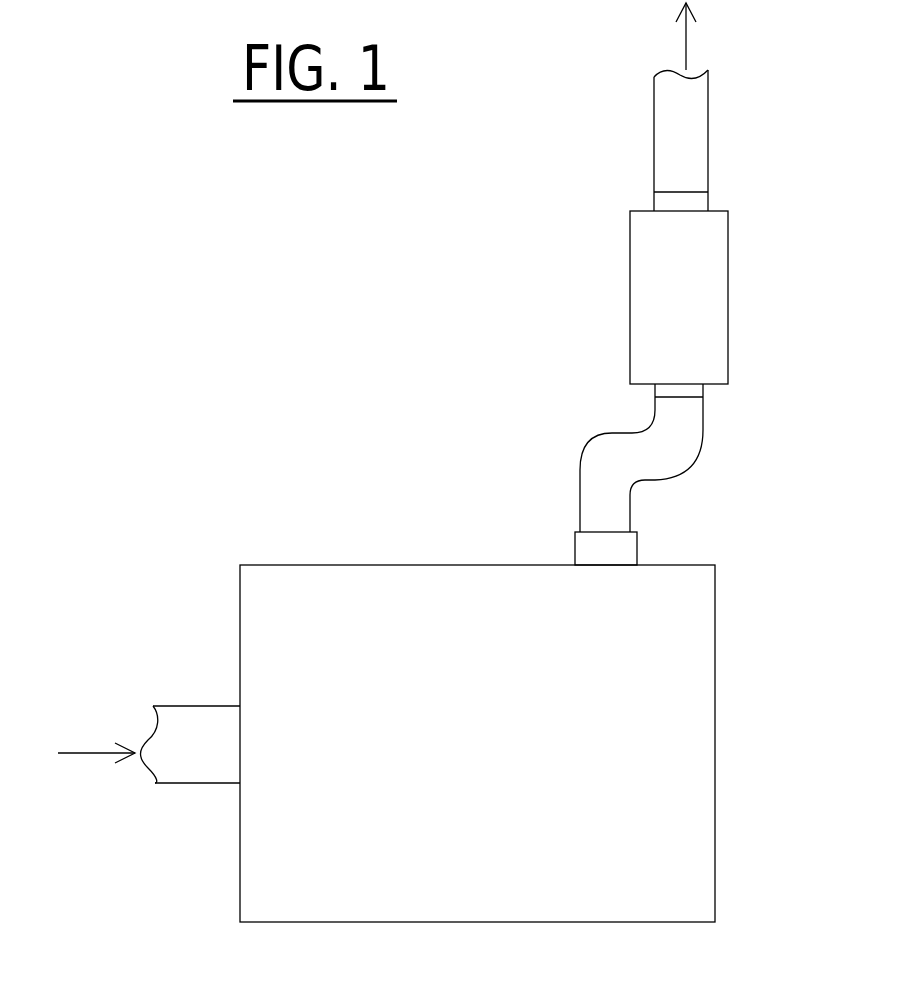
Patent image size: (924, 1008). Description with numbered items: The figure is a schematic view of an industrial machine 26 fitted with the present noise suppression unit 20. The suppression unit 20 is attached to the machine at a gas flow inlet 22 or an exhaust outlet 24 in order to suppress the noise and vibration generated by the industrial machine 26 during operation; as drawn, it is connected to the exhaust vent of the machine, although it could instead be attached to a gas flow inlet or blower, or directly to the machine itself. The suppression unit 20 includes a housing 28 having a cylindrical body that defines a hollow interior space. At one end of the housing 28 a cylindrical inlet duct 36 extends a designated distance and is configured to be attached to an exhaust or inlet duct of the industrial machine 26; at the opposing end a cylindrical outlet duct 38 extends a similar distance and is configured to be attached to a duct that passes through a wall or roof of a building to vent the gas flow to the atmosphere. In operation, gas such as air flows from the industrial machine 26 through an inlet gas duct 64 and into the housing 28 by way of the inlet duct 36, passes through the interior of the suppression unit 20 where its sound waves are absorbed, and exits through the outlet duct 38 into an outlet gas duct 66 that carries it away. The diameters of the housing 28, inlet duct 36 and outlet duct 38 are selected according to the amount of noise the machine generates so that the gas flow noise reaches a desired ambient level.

The suppression unit 20 is at (842, 220).
The gas flow inlet 22 is at (149, 699).
The exhaust outlet 24 is at (672, 528).
The industrial machine 26 is at (529, 743).
The housing 28 is at (728, 340).
The inlet duct 36 is at (657, 391).
The outlet duct 38 is at (659, 201).
The inlet gas duct 64 is at (667, 447).
The outlet gas duct 66 is at (731, 107).